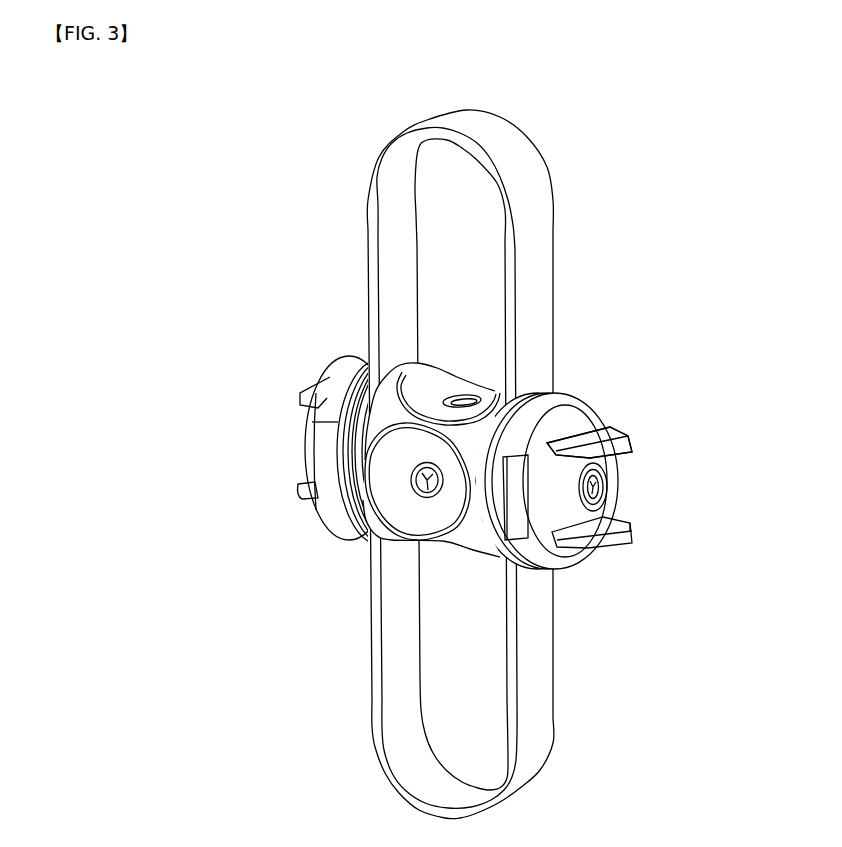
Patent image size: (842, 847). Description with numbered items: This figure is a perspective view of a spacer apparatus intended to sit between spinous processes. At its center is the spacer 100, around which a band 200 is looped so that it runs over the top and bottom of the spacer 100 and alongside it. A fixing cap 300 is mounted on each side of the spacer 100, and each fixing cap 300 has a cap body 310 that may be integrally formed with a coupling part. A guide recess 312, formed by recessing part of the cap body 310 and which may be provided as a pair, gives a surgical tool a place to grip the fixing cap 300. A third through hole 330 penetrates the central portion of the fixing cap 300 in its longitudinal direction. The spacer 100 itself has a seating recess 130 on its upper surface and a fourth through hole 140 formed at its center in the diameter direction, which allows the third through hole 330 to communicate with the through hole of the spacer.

The spacer 100 is at (365, 455).
The seating recess 130 is at (423, 430).
The fourth through hole 140 is at (413, 490).
The band 200 is at (543, 227).
The fixing cap 300 is at (346, 361).
The cap body 310 is at (610, 465).
The guide recess 312 is at (504, 497).
The third through hole 330 is at (596, 487).